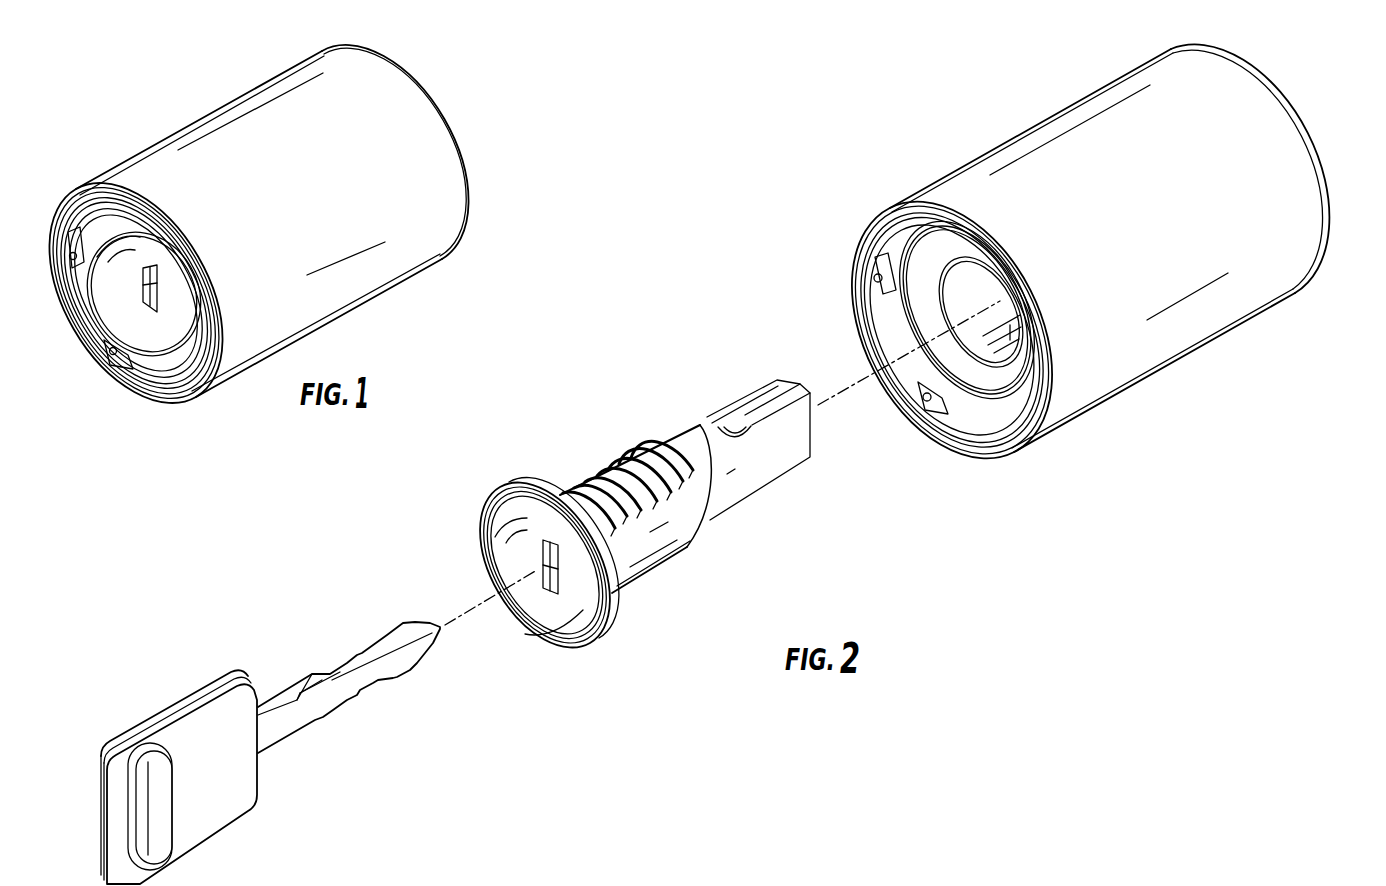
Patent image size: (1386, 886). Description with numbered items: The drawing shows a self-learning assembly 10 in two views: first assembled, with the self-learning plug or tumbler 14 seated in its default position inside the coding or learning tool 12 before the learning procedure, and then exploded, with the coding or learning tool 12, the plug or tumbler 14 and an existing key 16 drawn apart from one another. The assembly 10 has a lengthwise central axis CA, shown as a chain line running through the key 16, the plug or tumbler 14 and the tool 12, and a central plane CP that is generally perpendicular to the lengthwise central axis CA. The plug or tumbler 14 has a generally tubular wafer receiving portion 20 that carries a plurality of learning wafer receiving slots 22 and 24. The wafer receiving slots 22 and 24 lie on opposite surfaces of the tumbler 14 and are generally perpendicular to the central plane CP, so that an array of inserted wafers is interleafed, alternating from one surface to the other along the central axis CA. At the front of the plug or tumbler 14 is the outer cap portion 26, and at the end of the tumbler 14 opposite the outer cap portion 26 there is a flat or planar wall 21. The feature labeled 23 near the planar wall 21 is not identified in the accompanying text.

In FIG. 1, the self-learning assembly 10 is at (257, 261).
In FIG. 2, the self-learning assembly 10 is at (715, 464).
In FIG. 1, the coding or learning tool 12 is at (305, 206).
In FIG. 2, the coding or learning tool 12 is at (1154, 232).
In FIG. 1, the plug or tumbler 14 is at (144, 344).
In FIG. 2, the plug or tumbler 14 is at (613, 522).
In FIG. 2, the existing key 16 is at (224, 797).
In FIG. 2, the wafer receiving portion 20 is at (647, 505).
In FIG. 2, the flat or planar wall 21 is at (783, 458).
In FIG. 2, the learning wafer receiving slot 22 is at (655, 457).
In FIG. 2, the notch 23 is at (739, 432).
In FIG. 2, the learning wafer receiving slot 24 is at (628, 600).
In FIG. 1, the outer cap portion 26 is at (160, 333).
In FIG. 2, the outer cap portion 26 is at (572, 620).
In FIG. 2, the central plane CP is at (551, 707).
In FIG. 2, the lengthwise central axis CA is at (849, 404).